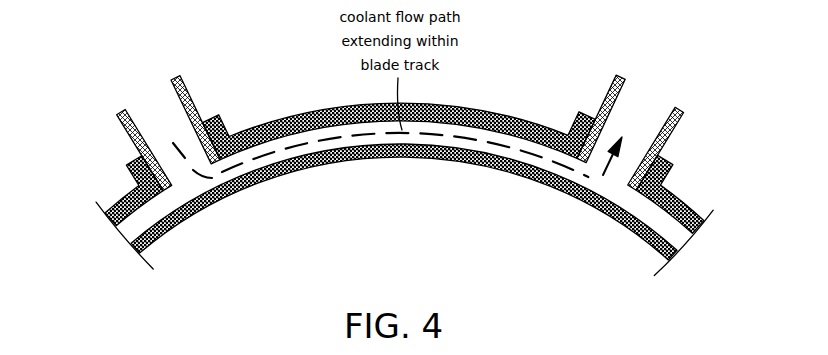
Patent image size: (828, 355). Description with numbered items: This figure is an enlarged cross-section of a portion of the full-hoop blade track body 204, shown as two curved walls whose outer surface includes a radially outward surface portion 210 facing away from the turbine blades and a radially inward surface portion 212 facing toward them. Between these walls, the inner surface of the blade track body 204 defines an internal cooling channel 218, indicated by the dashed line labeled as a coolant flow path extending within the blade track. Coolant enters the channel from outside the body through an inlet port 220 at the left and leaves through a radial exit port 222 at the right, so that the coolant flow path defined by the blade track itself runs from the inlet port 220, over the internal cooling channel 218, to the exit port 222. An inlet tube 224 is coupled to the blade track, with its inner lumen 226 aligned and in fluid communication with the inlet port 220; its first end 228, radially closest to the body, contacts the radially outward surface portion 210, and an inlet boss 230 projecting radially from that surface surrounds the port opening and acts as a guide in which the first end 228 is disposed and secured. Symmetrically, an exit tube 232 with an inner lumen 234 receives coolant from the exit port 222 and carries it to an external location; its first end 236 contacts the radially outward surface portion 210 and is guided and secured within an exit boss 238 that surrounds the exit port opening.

The blade track body 204 is at (493, 170).
The radially outward surface portion 210 is at (480, 110).
The radially inward surface portion 212 is at (282, 173).
The internal cooling channel 218 is at (385, 144).
The inlet port 220 is at (187, 178).
The radial exit port 222 is at (615, 173).
The inlet tube 224 is at (124, 130).
The inner lumen 226 is at (168, 112).
The first end 228 is at (152, 176).
The inlet boss 230 is at (222, 131).
The exit tube 232 is at (603, 102).
The inner lumen 234 is at (640, 125).
The first end 236 is at (661, 178).
The exit boss 238 is at (570, 128).